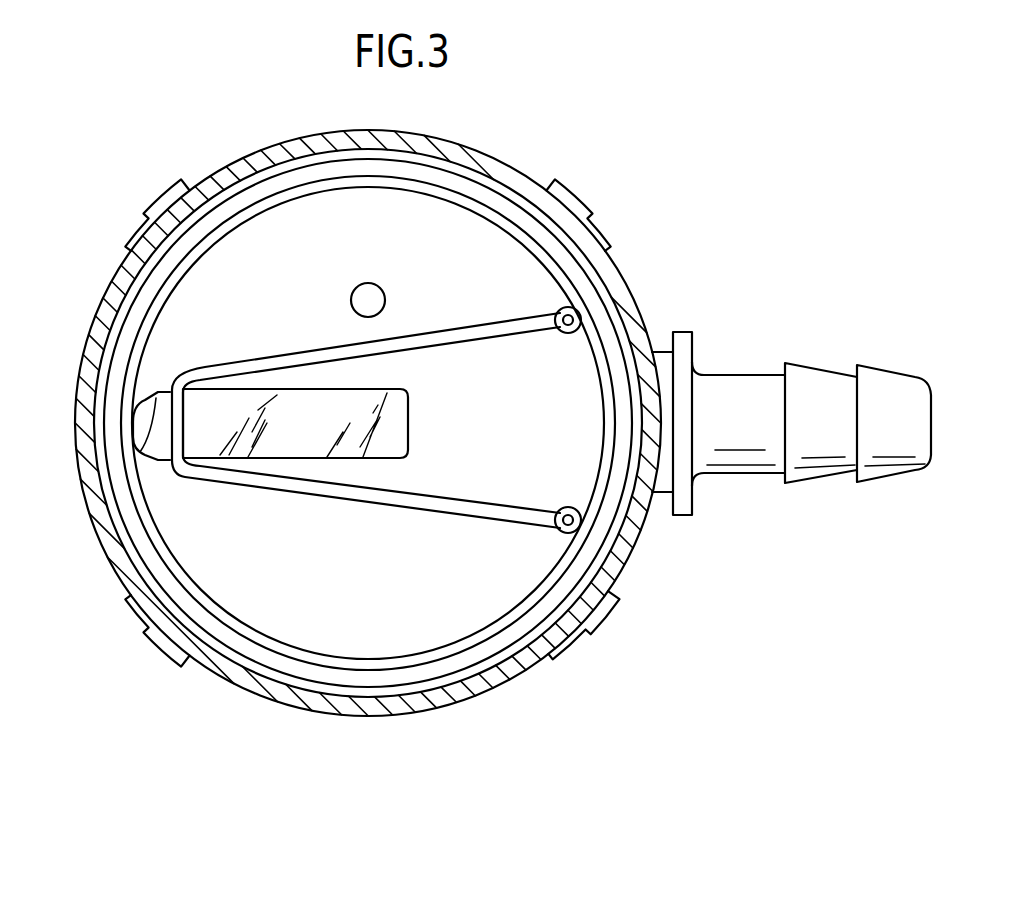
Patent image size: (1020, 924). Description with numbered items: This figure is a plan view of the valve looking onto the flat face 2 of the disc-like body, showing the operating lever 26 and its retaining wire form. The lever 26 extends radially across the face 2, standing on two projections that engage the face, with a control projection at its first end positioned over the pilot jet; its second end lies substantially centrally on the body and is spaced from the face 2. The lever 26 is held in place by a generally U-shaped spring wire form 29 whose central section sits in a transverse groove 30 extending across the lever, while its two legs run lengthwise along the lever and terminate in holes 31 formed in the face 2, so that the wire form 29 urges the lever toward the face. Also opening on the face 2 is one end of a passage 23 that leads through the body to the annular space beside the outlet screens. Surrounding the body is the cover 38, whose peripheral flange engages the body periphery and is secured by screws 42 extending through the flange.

The face 2 is at (218, 322).
The passage 23 is at (366, 283).
The lever 26 is at (290, 435).
The spring wire form 29 is at (380, 500).
The transverse groove 30 is at (168, 432).
The holes 31 is at (571, 333).
The cover 38 is at (320, 705).
The screws 42 is at (598, 625).